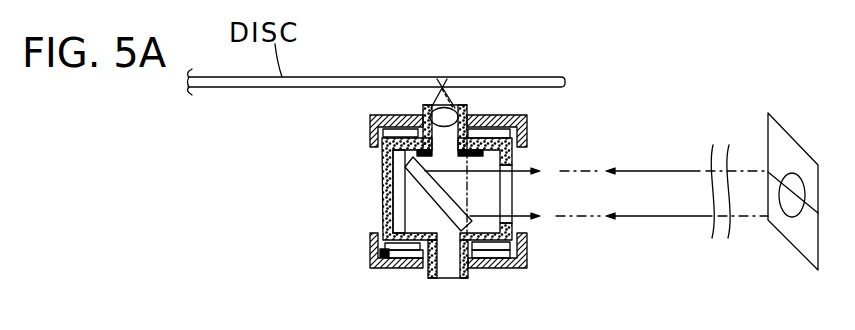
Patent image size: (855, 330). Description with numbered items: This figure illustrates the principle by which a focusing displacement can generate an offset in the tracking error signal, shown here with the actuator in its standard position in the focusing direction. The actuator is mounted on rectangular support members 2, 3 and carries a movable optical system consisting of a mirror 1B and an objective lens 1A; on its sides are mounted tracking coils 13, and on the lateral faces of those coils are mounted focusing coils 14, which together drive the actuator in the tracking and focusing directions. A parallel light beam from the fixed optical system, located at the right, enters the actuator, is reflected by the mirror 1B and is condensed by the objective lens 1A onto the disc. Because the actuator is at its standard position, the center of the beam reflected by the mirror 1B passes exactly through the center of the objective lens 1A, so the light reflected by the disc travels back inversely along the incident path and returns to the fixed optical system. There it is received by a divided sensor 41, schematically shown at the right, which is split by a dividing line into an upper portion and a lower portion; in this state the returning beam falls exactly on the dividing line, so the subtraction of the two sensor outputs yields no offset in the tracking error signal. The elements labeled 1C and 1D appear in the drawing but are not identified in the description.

The objective lens 1A is at (439, 88).
The mirror 1B is at (418, 184).
The optical housing wall 1C is at (513, 154).
The light beams 1D is at (502, 189).
The support member 2 is at (528, 126).
The support member 3 is at (528, 245).
The tracking coil 13 is at (402, 230).
The focusing coil 14 is at (384, 254).
The divided sensor 41 is at (799, 134).